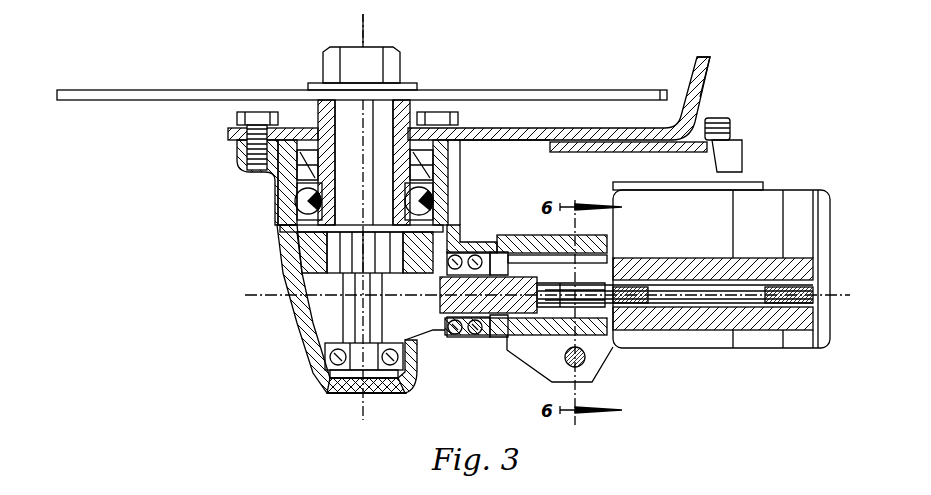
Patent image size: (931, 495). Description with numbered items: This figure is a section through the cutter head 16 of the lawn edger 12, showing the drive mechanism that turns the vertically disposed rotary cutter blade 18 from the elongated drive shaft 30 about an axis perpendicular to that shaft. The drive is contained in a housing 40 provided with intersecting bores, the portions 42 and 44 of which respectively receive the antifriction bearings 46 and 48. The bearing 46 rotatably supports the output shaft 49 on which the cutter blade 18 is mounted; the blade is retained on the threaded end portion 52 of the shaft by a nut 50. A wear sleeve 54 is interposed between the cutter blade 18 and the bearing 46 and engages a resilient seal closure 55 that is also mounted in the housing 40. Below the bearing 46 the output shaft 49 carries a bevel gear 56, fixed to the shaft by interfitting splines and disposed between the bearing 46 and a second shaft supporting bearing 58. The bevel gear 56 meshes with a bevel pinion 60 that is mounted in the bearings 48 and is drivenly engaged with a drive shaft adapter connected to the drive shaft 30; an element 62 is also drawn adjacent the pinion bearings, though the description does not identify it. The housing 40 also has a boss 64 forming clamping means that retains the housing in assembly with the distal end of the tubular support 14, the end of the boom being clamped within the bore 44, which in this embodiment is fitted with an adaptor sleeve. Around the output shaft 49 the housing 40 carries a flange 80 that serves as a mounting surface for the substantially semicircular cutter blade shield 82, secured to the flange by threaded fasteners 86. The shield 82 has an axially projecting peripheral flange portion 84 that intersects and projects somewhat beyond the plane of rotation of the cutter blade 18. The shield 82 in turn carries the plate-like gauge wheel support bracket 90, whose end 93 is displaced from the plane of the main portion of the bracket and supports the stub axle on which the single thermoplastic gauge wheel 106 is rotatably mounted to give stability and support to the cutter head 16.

The lawn edger 12 is at (668, 410).
The elongated support 14 is at (730, 348).
The cutter head 16 is at (322, 438).
The rotary cutter blade 18 is at (581, 90).
The drive shaft 30 is at (702, 287).
The housing 40 is at (315, 384).
The bore portion 42 is at (448, 200).
The bore portion 44 is at (480, 340).
The antifriction bearing 46 is at (290, 212).
The antifriction bearings 48 is at (448, 338).
The output shaft 49 is at (345, 180).
The nut 50 is at (400, 62).
The threaded end portion 52 is at (367, 36).
The wear sleeve 54 is at (320, 118).
The resilient seal closure 55 is at (458, 122).
The bevel gear 56 is at (305, 256).
The second shaft supporting bearing 58 is at (330, 352).
The bevel pinion 60 is at (392, 372).
The bearing spacer 62 is at (530, 340).
The boss 64 is at (605, 236).
The flange 80 is at (228, 134).
The cutter blade shield 82 is at (540, 128).
The peripheral flange portion 84 is at (710, 66).
The threaded fasteners 86 is at (237, 118).
The gauge wheel support bracket 90 is at (598, 152).
The end of the bracket 93 is at (760, 170).
The gauge wheel 106 is at (775, 190).